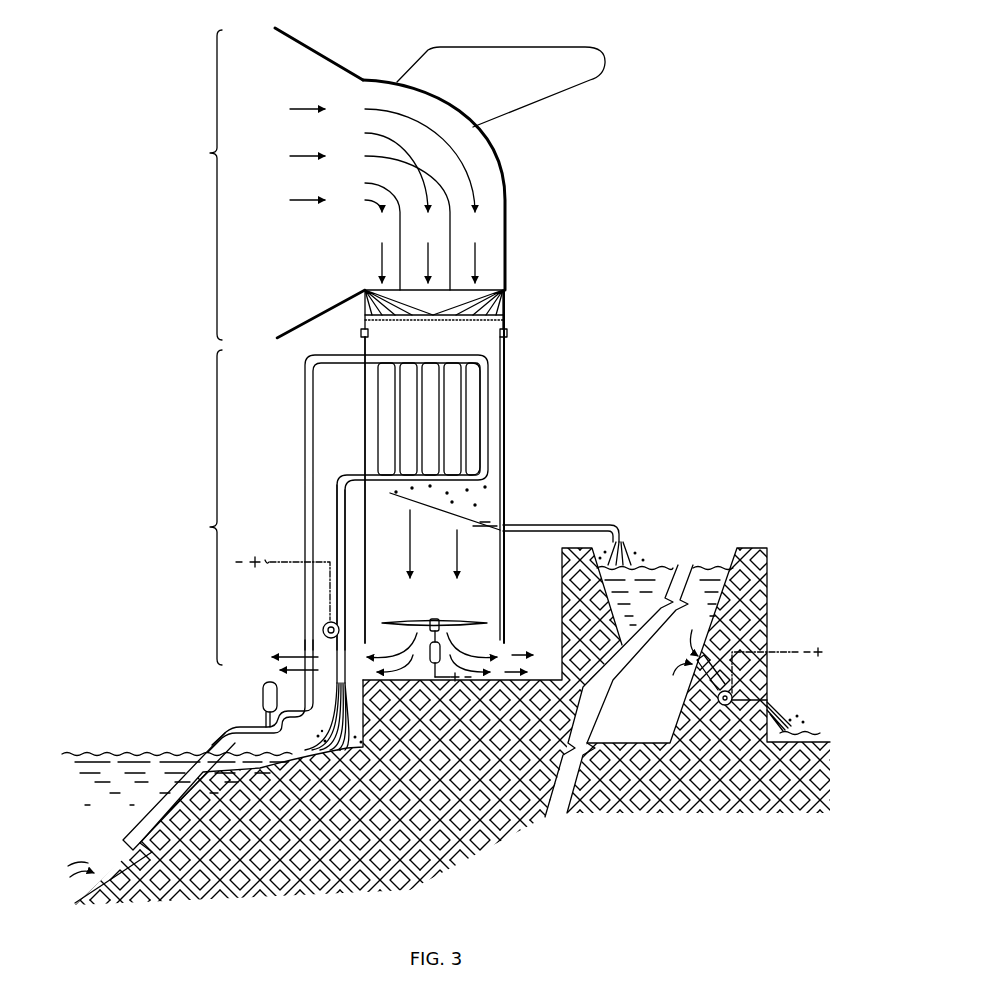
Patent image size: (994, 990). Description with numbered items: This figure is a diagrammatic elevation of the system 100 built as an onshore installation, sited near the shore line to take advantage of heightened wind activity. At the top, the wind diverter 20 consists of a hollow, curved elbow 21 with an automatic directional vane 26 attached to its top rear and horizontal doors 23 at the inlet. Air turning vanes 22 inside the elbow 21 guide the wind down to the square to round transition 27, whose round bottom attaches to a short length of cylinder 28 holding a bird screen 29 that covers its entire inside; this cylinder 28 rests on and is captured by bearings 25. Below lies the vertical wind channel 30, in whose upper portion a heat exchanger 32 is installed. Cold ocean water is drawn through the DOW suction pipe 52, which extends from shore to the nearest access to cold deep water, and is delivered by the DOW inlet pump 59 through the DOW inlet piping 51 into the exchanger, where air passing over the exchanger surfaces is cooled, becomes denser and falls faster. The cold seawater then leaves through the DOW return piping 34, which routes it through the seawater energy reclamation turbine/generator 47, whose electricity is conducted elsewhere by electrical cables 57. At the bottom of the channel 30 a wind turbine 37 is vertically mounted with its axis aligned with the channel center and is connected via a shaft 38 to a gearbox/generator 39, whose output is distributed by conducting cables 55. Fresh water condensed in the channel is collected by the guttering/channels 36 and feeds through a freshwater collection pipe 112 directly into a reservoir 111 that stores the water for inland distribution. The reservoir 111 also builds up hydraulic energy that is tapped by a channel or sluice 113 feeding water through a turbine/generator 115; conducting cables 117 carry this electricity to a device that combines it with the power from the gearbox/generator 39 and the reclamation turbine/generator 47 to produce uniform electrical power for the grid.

The system 100 is at (140, 243).
The wind diverter 20 is at (203, 185).
The vertical wind channel 30 is at (200, 507).
The curved elbow 21 is at (490, 152).
The air turning vanes 22 is at (398, 227).
The horizontal doors 23 is at (336, 63).
The bearings 25 is at (508, 334).
The automatic directional vane 26 is at (582, 43).
The square to round transition 27 is at (508, 300).
The short length of cylinder 28 is at (507, 322).
The bird screen 29 is at (358, 330).
The heat exchanger coil 32 is at (430, 355).
The DOW return piping 34 is at (338, 503).
The guttering/channels 36 is at (453, 517).
The wind turbine 37 is at (420, 618).
The shaft 38 is at (445, 623).
The gearbox/generator 39 is at (434, 660).
The seawater energy reclamation turbine/generator 47 is at (323, 622).
The DOW inlet piping 51 is at (305, 517).
The DOW suction pipe 52 is at (126, 832).
The conducting cables 55 is at (453, 681).
The electrical cables 57 is at (298, 560).
The DOW inlet pump 59 is at (265, 715).
The reservoir 111 is at (753, 547).
The freshwater collection pipe 112 is at (558, 523).
The channel or sluice 113 is at (707, 682).
The turbine/generator 115 is at (767, 698).
The conducting cables 117 is at (777, 652).